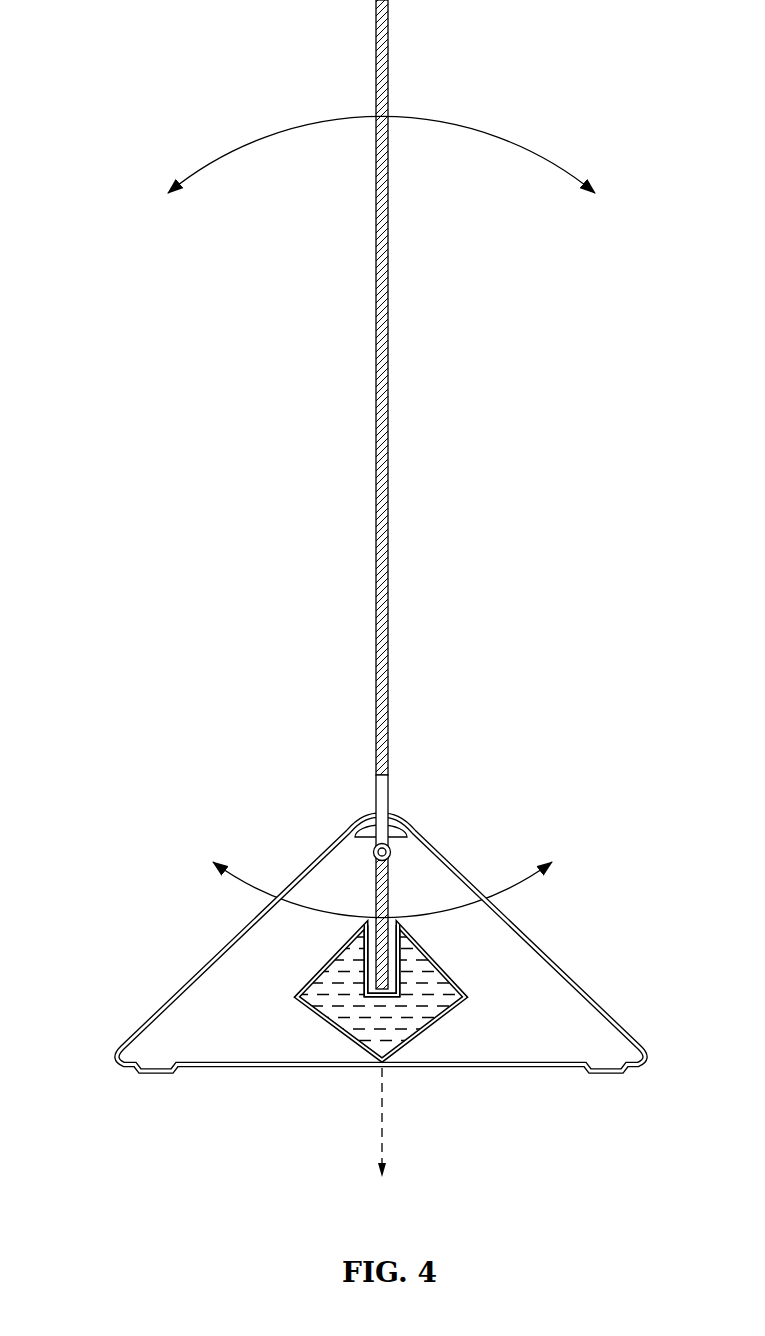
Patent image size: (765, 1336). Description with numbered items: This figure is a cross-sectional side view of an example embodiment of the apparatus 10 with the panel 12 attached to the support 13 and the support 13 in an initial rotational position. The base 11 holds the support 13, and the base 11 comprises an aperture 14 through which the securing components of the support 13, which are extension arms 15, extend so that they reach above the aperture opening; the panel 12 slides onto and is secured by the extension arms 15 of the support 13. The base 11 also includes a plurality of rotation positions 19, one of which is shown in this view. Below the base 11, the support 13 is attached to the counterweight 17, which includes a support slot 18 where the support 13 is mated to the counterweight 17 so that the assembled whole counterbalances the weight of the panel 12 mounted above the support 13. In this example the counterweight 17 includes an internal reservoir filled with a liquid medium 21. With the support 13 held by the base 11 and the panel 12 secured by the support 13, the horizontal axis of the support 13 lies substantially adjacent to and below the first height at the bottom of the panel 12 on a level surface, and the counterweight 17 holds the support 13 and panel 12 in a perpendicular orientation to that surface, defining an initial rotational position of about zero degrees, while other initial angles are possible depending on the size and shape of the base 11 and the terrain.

The mooring anchor device 10 is at (122, 74).
The base 11 is at (543, 973).
The panel 12 is at (388, 285).
The support 13 is at (375, 877).
The aperture 14 is at (352, 823).
The extension arms 15 is at (384, 798).
The counterweight 17 is at (383, 990).
The support slot 18 is at (400, 957).
The rotation positions 19 is at (392, 852).
The liquid medium 21 is at (343, 1000).